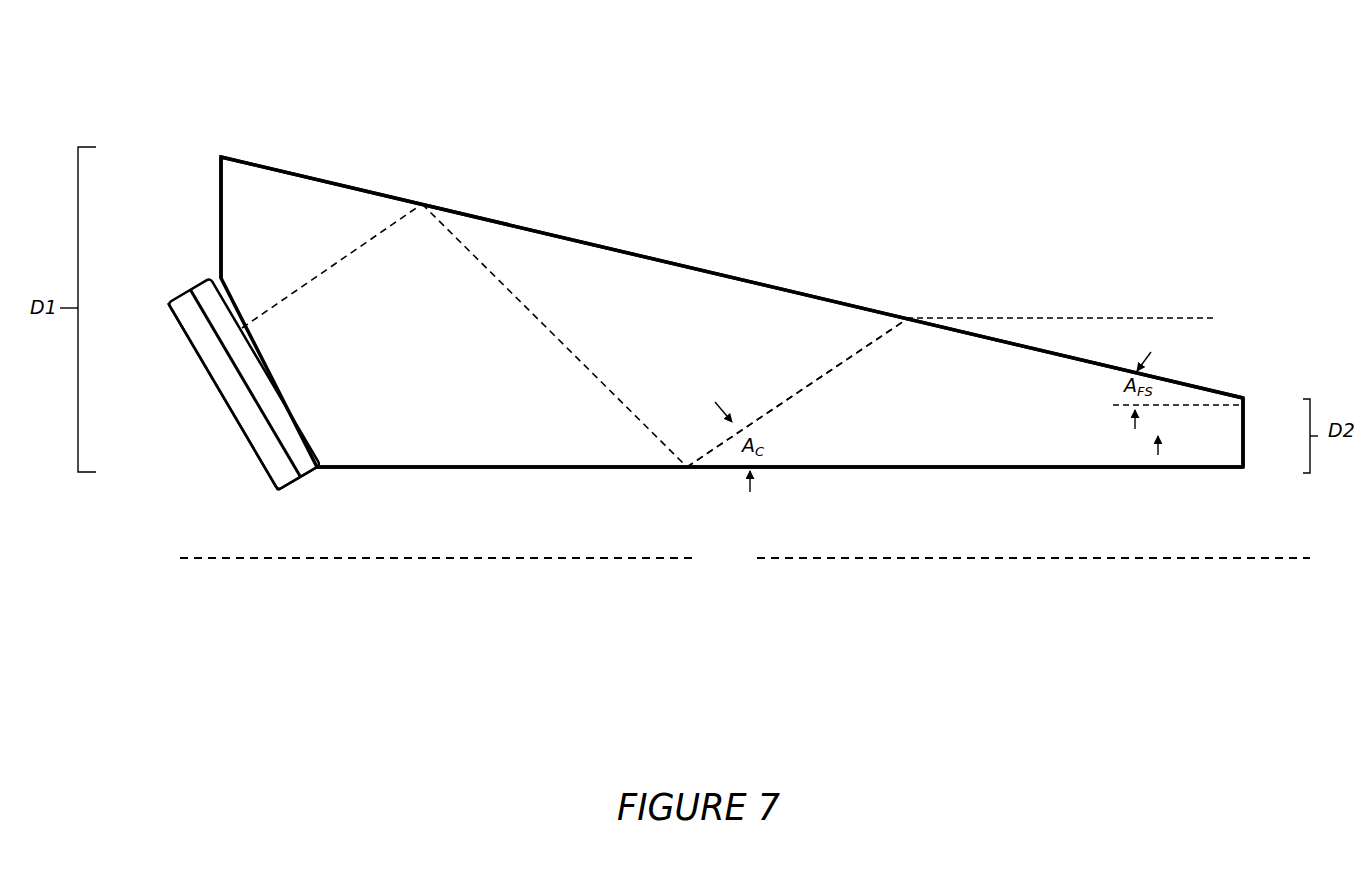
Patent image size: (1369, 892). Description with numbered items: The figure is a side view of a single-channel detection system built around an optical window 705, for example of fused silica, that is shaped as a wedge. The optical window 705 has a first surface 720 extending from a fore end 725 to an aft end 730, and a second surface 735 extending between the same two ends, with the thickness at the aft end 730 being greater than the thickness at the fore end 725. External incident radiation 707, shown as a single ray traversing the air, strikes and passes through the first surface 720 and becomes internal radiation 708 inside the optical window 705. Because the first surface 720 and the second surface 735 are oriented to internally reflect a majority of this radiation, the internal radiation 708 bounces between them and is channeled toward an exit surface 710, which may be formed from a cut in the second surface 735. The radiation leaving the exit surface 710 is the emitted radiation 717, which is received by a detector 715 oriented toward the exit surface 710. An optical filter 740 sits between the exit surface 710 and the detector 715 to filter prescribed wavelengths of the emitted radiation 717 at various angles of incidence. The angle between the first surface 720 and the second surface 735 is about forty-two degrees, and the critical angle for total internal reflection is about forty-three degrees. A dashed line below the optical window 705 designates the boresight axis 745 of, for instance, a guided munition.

The optical window 705 is at (740, 344).
The external incident radiation 707 is at (1071, 315).
The internal radiation 708 is at (853, 353).
The exit surface 710 is at (296, 408).
The detector 715 is at (233, 415).
The emitted radiation 717 is at (212, 346).
The first surface 720 is at (778, 286).
The fore end 725 is at (1246, 438).
The aft end 730 is at (210, 178).
The second surface 735 is at (902, 470).
The optical filter 740 is at (316, 470).
The boresight axis 745 is at (745, 556).